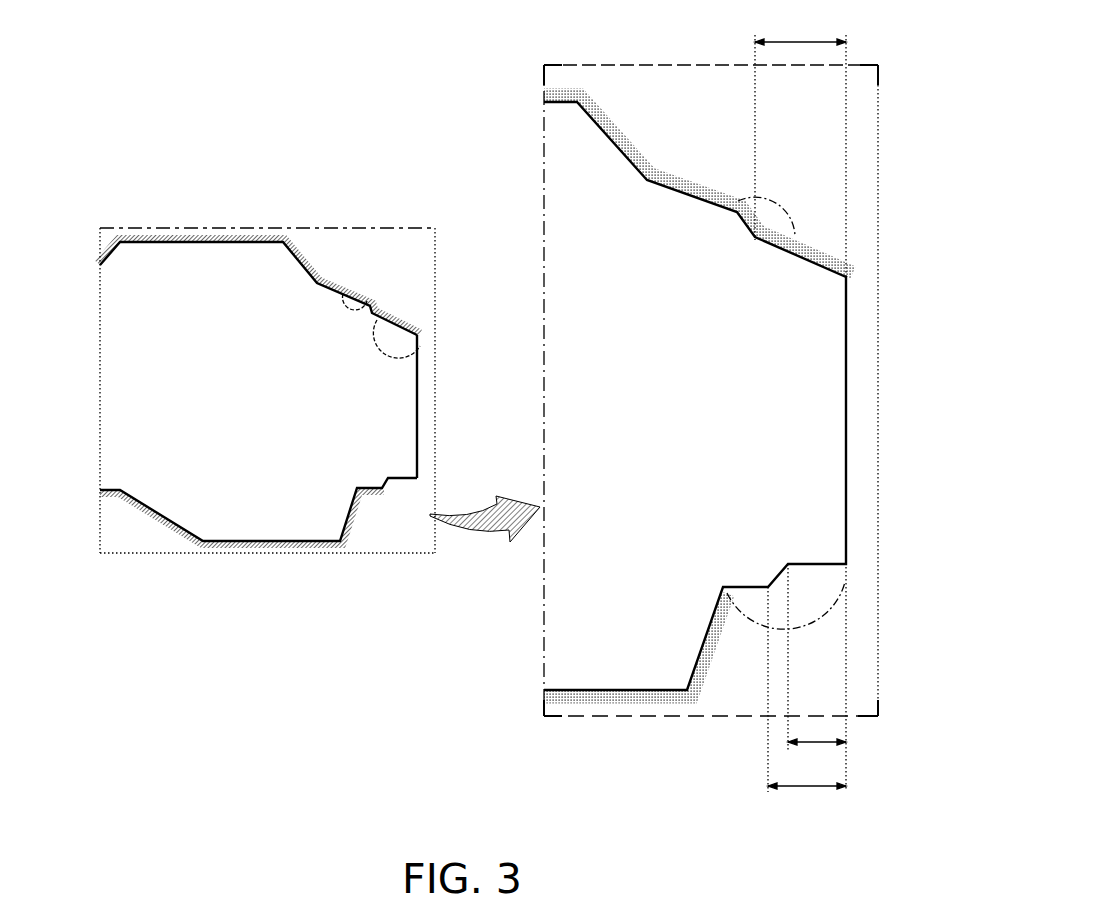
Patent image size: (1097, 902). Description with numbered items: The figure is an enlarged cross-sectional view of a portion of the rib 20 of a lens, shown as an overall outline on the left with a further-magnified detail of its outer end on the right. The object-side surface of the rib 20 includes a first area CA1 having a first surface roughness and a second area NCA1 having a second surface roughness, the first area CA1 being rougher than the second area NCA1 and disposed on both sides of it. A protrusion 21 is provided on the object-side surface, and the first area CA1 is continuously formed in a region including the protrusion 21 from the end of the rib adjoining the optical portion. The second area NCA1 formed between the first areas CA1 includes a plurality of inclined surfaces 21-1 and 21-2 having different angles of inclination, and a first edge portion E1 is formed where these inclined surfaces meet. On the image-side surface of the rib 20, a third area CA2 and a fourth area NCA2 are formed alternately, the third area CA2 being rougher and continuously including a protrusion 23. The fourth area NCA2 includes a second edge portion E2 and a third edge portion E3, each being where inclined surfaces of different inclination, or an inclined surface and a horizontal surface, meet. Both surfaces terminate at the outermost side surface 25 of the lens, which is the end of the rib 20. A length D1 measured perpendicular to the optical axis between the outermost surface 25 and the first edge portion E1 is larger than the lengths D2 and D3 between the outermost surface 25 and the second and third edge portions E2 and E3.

The rib 20 is at (132, 350).
The protrusion 21 is at (182, 255).
The inclined surface 21-1 is at (350, 291).
The inclined surface 21-2 is at (421, 346).
The protrusion 23 is at (237, 533).
The outermost side surface 25 is at (418, 420).
The first area CA1 is at (254, 233).
The third area CA2 is at (287, 556).
The second area NCA1 is at (775, 210).
The fourth area NCA2 is at (813, 607).
The first edge portion E1 is at (749, 257).
The second edge portion E2 is at (788, 548).
The third edge portion E3 is at (760, 574).
The length D1 is at (800, 401).
The length D2 is at (817, 668).
The length D3 is at (807, 701).